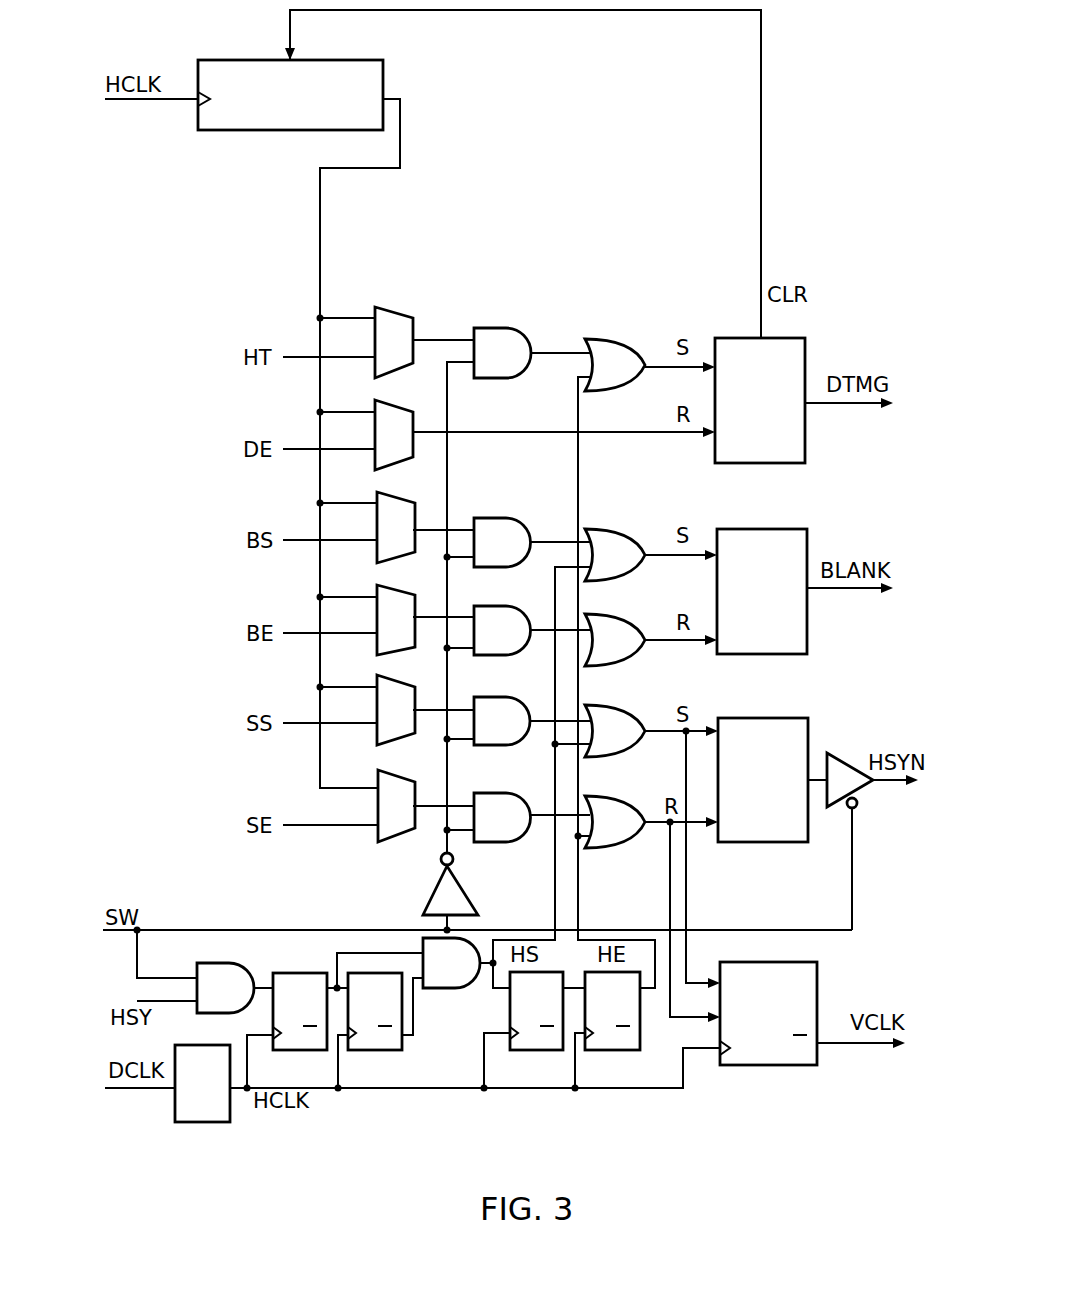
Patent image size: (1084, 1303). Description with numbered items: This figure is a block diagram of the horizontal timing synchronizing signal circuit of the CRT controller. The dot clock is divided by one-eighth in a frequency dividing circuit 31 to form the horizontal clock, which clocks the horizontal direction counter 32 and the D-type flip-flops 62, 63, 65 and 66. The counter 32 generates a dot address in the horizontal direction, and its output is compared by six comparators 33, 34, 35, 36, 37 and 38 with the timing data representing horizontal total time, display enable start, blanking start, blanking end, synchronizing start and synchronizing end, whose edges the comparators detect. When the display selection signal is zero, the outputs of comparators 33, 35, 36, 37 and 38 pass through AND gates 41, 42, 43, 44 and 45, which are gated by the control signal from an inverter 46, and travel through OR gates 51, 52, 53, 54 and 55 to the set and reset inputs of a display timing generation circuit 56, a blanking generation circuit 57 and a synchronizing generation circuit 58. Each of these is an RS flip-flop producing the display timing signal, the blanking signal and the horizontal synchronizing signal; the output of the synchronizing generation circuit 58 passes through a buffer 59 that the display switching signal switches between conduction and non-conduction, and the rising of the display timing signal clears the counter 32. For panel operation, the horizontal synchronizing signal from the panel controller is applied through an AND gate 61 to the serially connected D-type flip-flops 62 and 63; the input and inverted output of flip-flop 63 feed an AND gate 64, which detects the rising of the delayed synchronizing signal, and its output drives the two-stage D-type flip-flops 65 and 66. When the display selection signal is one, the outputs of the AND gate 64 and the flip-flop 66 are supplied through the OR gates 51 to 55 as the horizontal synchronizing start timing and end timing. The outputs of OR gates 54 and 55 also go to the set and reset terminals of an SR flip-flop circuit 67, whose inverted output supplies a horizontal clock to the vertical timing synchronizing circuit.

The frequency dividing circuit 31 is at (195, 1122).
The horizontal direction counter 32 is at (228, 130).
The comparator 33 is at (405, 308).
The comparator 34 is at (393, 403).
The comparator 35 is at (395, 495).
The comparator 36 is at (395, 588).
The comparator 37 is at (393, 678).
The comparator 38 is at (392, 772).
The AND gate 41 is at (500, 328).
The AND gate 42 is at (485, 518).
The AND gate 43 is at (485, 606).
The AND gate 44 is at (480, 697).
The AND gate 45 is at (480, 793).
The inverter 46 is at (468, 893).
The OR gate 51 is at (618, 339).
The OR gate 52 is at (600, 529).
The OR gate 53 is at (600, 614).
The OR gate 54 is at (595, 705).
The OR gate 55 is at (598, 796).
The DTMG generation circuit 56 is at (720, 338).
The BLANK generation circuit 57 is at (790, 529).
The SYNC generation circuit 58 is at (755, 842).
The buffer 59 is at (840, 753).
The AND gate 61 is at (220, 963).
The D-type flip-flop 62 is at (296, 973).
The D-type flip-flop 63 is at (380, 1050).
The AND gate 64 is at (437, 988).
The D-type flip-flop 65 is at (533, 1050).
The D-type flip-flop 66 is at (610, 1050).
The SR flip-flop circuit 67 is at (780, 1065).